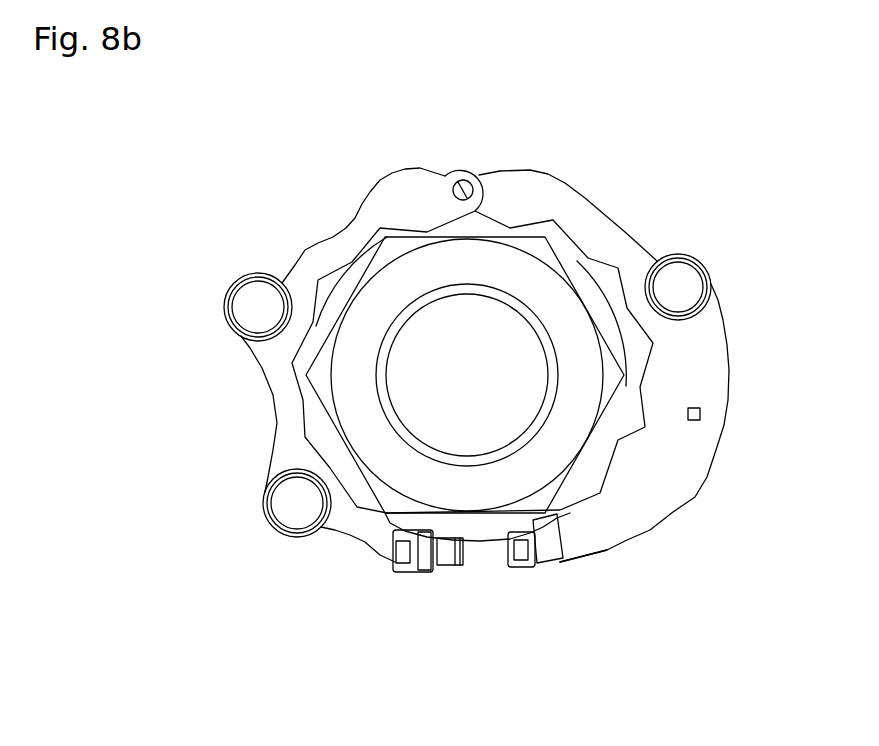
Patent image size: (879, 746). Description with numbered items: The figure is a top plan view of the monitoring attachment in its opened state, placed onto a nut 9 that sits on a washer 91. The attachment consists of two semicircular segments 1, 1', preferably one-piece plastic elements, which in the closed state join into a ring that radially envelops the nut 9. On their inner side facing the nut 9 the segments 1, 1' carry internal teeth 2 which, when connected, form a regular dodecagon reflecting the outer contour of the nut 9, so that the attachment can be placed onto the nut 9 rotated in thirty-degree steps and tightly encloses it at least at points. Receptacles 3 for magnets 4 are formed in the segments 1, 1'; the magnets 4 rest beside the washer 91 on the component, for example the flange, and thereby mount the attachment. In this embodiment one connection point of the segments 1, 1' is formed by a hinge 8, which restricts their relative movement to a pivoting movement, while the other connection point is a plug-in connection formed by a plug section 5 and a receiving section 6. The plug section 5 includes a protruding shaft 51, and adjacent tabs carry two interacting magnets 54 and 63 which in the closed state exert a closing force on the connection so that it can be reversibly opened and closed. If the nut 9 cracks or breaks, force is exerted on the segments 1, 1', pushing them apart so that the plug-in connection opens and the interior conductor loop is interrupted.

The segment 1 is at (485, 331).
The segment 1' is at (320, 222).
The internal teeth 2 is at (285, 380).
The receptacle 3 is at (230, 292).
The magnet 4 is at (247, 308).
The plug section 5 is at (465, 604).
The shaft 51 is at (455, 548).
The magnet 54 is at (405, 557).
The receiving section 6 is at (596, 605).
The magnet 63 is at (522, 548).
The hinge 8 is at (461, 118).
The nut 9 is at (468, 300).
The washer 91 is at (618, 438).